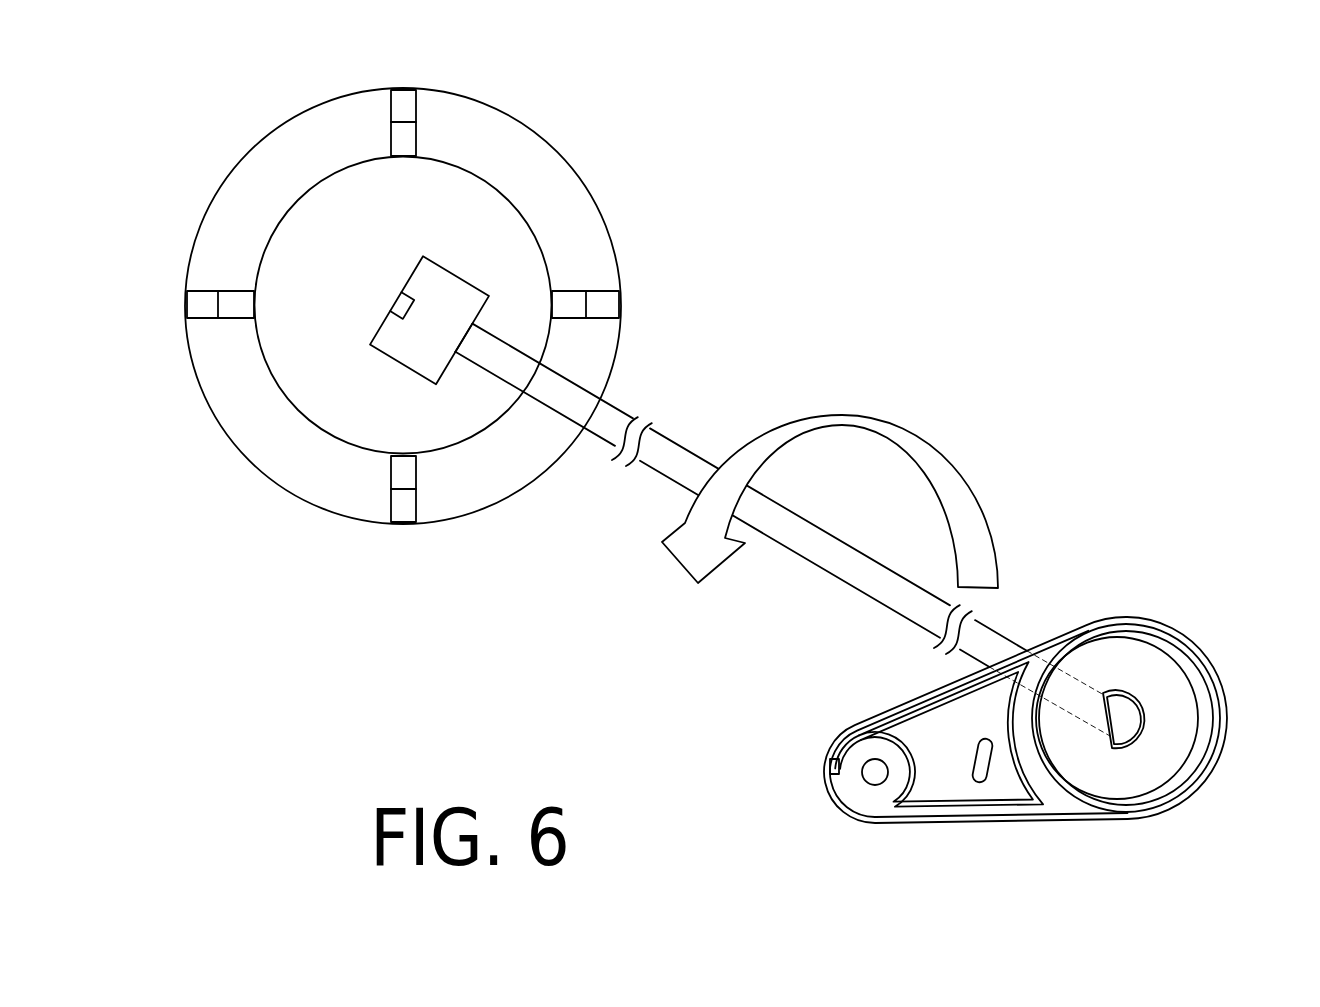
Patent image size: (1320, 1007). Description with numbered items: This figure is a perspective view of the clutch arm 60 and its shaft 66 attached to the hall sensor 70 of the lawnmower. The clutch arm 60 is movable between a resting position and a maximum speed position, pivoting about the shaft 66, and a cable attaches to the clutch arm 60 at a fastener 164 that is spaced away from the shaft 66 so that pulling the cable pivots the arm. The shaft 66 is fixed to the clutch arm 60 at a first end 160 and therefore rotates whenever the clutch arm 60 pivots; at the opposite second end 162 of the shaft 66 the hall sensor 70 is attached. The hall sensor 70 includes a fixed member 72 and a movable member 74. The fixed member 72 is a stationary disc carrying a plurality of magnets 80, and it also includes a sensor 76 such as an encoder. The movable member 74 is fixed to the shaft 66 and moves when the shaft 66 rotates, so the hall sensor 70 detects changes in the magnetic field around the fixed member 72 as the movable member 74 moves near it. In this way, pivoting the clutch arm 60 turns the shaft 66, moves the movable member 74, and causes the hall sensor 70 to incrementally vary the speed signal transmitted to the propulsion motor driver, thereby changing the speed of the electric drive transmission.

The clutch arm 60 is at (1037, 740).
The shaft 66 is at (838, 578).
The hall sensor 70 is at (402, 308).
The fixed member 72 is at (555, 150).
The movable member 74 is at (457, 276).
The sensor 76 is at (399, 295).
The magnets 80 is at (403, 104).
The first end 160 is at (1160, 702).
The second end 162 is at (456, 352).
The fastener 164 is at (875, 772).